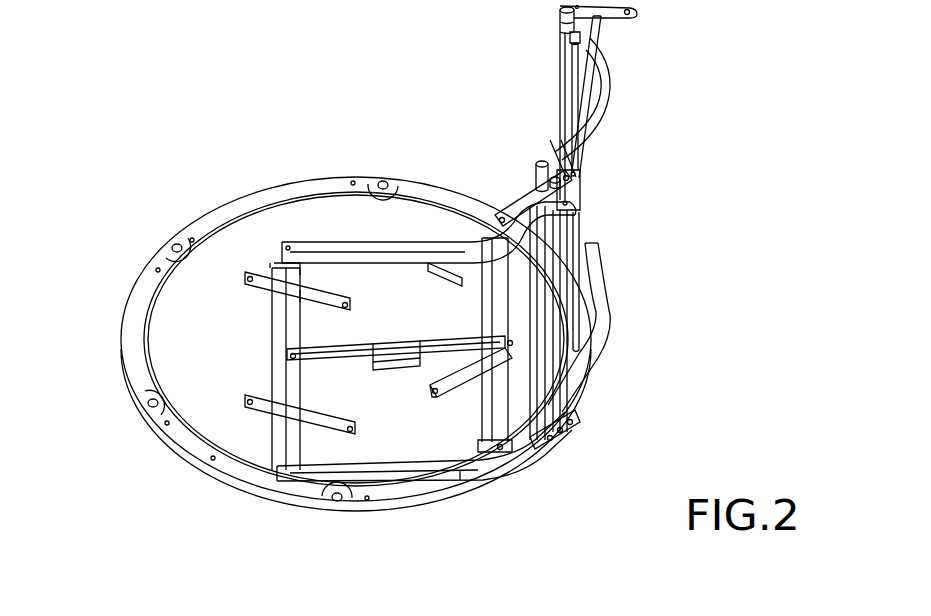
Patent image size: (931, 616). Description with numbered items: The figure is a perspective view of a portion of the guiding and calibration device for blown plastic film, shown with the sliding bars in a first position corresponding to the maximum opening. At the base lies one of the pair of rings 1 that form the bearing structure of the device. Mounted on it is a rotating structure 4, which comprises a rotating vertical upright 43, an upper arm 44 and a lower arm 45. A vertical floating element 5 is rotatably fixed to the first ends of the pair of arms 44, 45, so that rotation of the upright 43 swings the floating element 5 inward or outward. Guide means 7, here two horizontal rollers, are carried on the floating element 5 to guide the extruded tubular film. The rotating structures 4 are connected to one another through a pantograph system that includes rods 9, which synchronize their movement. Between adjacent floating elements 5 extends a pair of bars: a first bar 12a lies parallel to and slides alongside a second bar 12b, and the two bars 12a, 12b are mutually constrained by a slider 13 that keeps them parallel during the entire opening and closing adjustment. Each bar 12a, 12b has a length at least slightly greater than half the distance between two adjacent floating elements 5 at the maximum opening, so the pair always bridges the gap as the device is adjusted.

The ring 1 is at (285, 195).
The rotating structure 4 is at (520, 485).
The vertical floating element 5 is at (282, 333).
The guide means 7 is at (247, 280).
The rod 9 is at (592, 120).
The first bar 12a is at (422, 365).
The second bar 12b is at (375, 345).
The slider 13 is at (385, 358).
The rotating vertical upright 43 is at (550, 375).
The upper arm 44 is at (348, 258).
The lower arm 45 is at (405, 483).